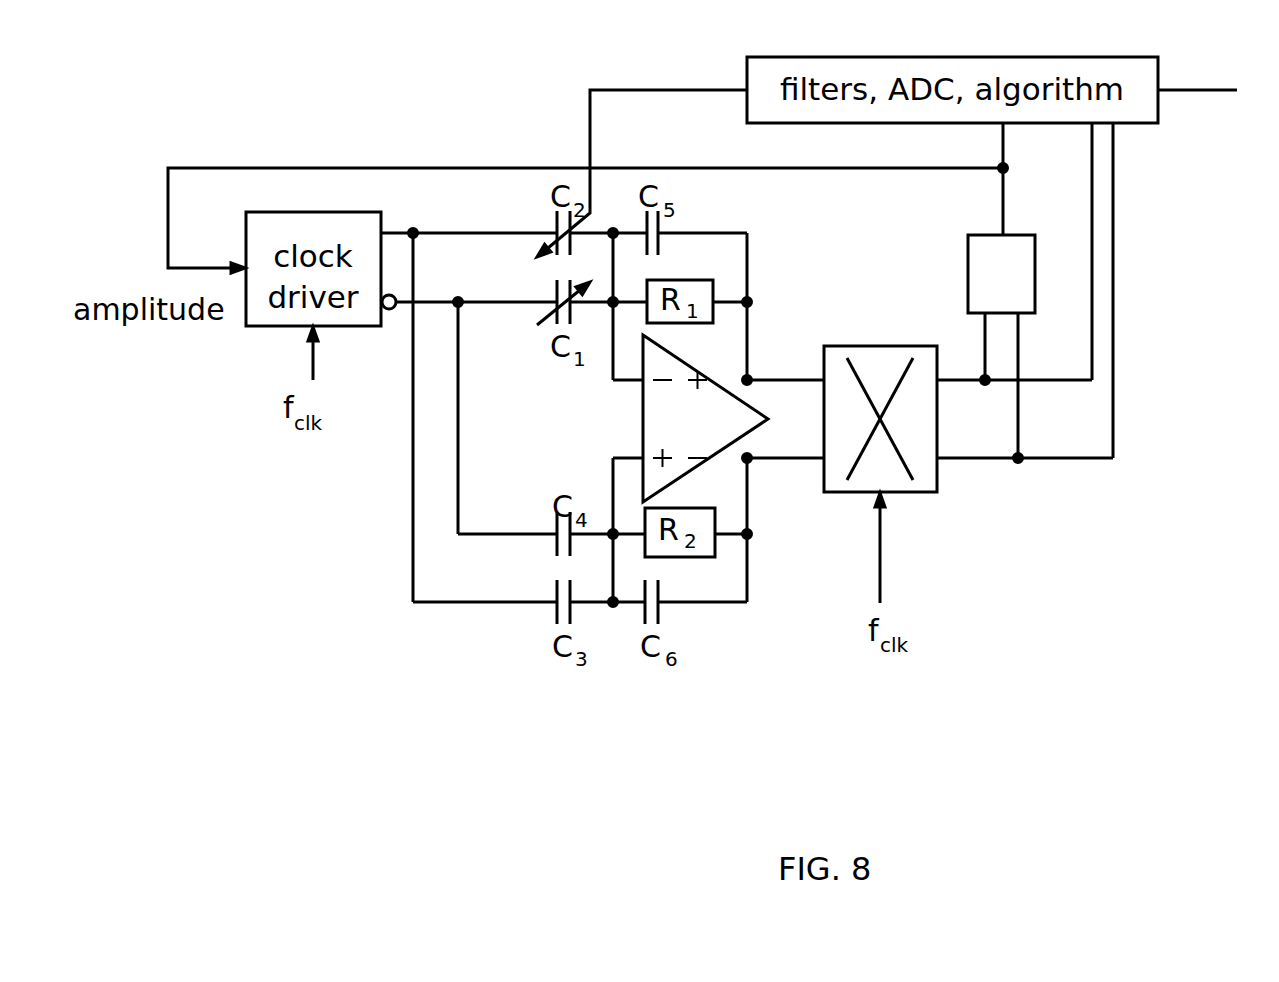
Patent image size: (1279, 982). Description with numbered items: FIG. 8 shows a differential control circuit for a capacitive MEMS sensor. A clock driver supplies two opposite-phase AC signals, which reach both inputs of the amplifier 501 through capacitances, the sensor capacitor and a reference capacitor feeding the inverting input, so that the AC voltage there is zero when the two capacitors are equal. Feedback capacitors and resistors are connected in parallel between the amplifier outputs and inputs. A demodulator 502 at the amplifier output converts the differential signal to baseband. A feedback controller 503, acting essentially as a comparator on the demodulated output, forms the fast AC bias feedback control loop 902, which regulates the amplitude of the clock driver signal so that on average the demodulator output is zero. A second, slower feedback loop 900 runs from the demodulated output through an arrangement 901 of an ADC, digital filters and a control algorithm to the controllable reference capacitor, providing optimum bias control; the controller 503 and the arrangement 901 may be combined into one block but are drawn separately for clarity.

The amplifier 501 is at (643, 403).
The demodulator 502 is at (880, 345).
The feedback controller 503 is at (968, 303).
The second feedback loop 900 is at (567, 95).
The arrangement of an ADC, digital filters and control algorithm 901 is at (1158, 80).
The AC bias feedback control loop 902 is at (269, 147).